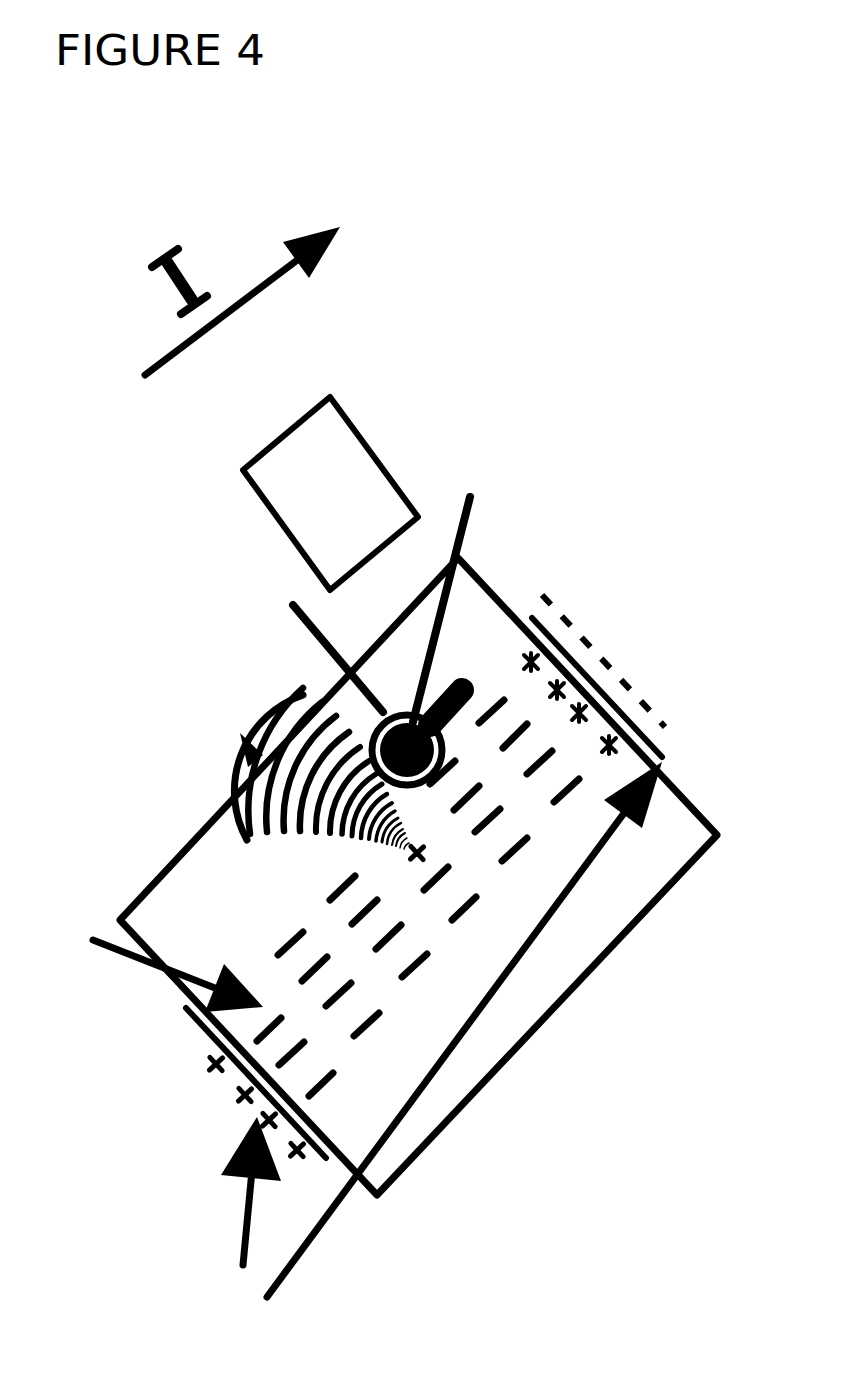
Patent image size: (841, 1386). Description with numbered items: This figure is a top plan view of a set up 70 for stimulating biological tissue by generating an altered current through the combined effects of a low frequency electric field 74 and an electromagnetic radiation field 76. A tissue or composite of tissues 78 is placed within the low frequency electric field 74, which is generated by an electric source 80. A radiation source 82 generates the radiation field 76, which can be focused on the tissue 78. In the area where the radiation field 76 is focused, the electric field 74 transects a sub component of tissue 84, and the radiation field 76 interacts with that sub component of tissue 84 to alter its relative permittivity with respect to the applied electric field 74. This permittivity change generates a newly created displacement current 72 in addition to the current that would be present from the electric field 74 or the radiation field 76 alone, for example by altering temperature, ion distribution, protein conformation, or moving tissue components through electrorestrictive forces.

The set up 70 is at (592, 372).
The displacement current 72 is at (198, 278).
The low frequency electric field 74 is at (154, 961).
The electromagnetic radiation field 76 is at (312, 860).
The tissue or composite of tissues 78 is at (583, 984).
The electric source 80 is at (437, 1047).
The radiation source 82 is at (242, 748).
The sub component of tissue 84 is at (285, 432).